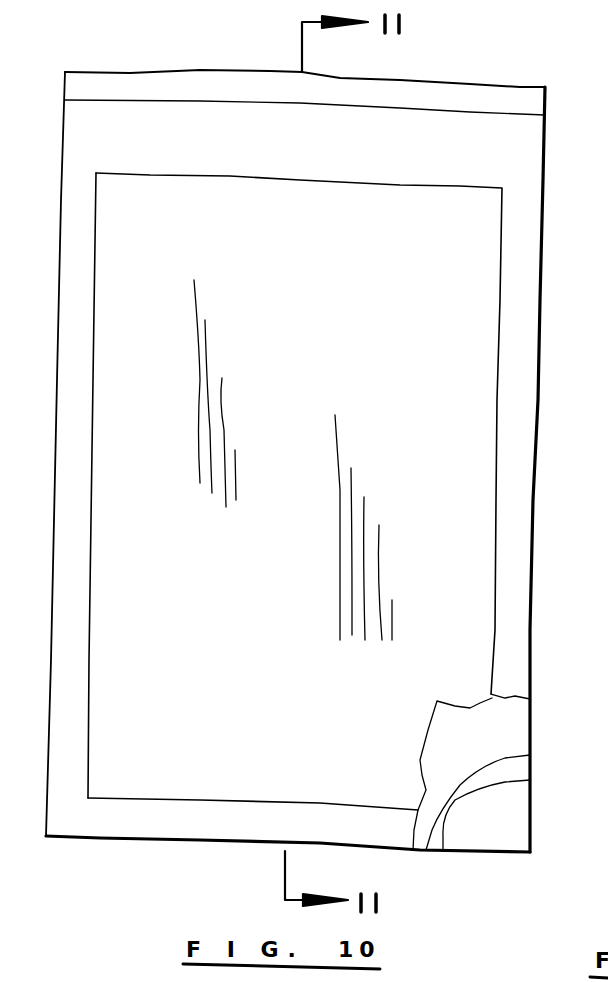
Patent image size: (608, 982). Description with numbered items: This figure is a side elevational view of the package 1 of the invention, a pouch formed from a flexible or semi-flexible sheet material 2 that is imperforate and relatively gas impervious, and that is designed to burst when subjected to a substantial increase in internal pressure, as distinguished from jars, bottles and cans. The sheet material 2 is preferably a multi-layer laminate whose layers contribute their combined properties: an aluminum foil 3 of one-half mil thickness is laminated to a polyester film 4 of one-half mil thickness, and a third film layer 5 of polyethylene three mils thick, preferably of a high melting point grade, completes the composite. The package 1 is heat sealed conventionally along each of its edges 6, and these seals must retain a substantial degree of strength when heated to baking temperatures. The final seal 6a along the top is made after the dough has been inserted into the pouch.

The package 1 is at (545, 154).
The sheet material 2 is at (520, 260).
The aluminum foil 3 is at (516, 736).
The polyester film 4 is at (518, 665).
The polyethylene film 5 is at (518, 767).
The edges 6 is at (72, 440).
The final seal 6a is at (405, 128).